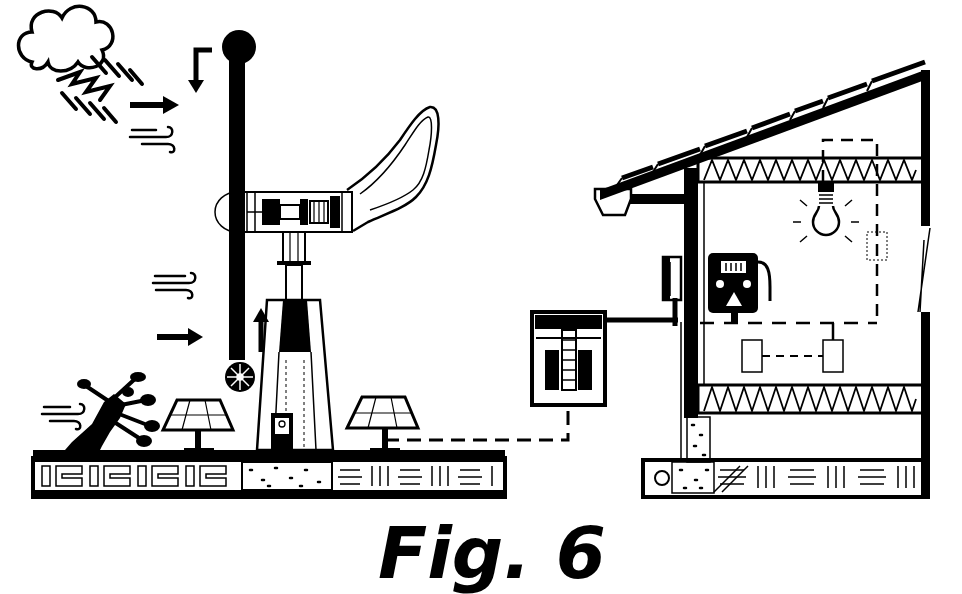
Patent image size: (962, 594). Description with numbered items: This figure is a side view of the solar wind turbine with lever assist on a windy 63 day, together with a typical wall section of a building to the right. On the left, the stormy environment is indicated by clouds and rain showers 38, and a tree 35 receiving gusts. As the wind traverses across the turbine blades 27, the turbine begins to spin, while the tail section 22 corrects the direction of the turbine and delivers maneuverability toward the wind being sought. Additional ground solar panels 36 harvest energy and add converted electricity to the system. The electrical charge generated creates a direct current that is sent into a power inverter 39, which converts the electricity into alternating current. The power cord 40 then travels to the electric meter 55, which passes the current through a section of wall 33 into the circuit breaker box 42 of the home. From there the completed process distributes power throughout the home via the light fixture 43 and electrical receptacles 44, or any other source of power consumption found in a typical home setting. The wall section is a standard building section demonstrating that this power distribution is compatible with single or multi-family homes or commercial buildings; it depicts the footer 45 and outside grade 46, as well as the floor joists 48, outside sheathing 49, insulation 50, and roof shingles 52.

The rain showers 38 is at (36, 76).
The turbine blades 27 is at (247, 120).
The tail section 22 is at (396, 142).
The windy day 63 is at (147, 280).
The tree 35 is at (126, 385).
The ground solar panels 36 is at (414, 406).
The power inverter 39 is at (550, 302).
The power cord 40 is at (527, 437).
The outside grade 46 is at (508, 489).
The roof shingles 52 is at (774, 120).
The insulation 50 is at (772, 186).
The outside sheathing 49 is at (674, 250).
The electric meter 55 is at (655, 280).
The light fixture 43 is at (803, 235).
The circuit breaker box 42 is at (772, 293).
The section of wall 33 is at (674, 370).
The electrical receptacles 44 is at (847, 361).
The footer 45 is at (690, 473).
The floor joists 48 is at (838, 413).